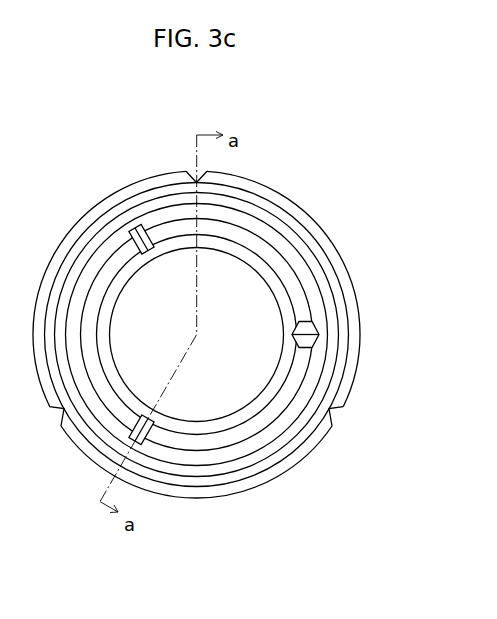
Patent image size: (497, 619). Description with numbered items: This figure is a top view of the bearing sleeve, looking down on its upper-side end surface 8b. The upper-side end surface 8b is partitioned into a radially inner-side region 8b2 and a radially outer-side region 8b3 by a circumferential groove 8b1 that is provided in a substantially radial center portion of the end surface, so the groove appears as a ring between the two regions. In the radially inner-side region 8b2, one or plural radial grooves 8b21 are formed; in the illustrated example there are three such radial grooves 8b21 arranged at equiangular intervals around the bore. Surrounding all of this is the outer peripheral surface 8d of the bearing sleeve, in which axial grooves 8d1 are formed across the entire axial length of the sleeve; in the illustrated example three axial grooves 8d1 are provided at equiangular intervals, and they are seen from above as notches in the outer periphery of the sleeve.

The upper-side end surface 8b is at (293, 179).
The circumferential groove 8b1 is at (283, 235).
The radially inner-side region 8b2 is at (290, 278).
The radially outer-side region 8b3 is at (338, 293).
The radial groove 8b21 is at (133, 237).
The outer peripheral surface 8d is at (67, 237).
The axial groove 8d1 is at (194, 172).